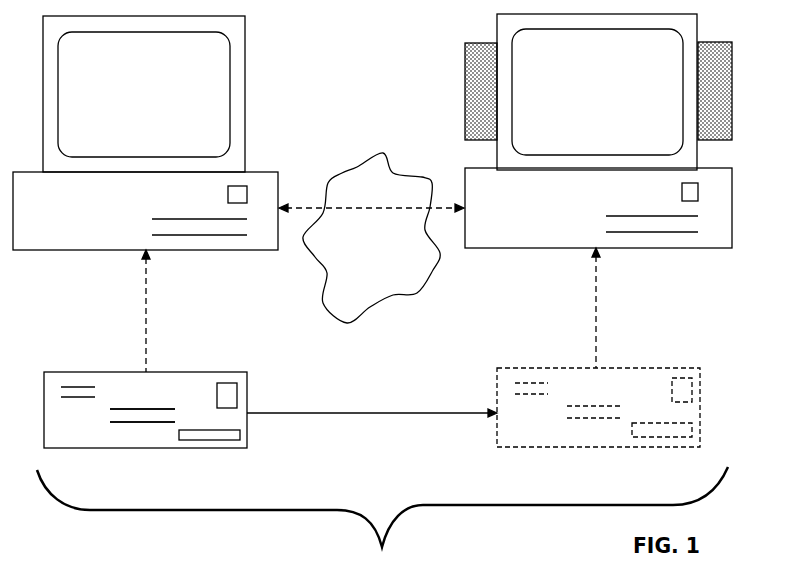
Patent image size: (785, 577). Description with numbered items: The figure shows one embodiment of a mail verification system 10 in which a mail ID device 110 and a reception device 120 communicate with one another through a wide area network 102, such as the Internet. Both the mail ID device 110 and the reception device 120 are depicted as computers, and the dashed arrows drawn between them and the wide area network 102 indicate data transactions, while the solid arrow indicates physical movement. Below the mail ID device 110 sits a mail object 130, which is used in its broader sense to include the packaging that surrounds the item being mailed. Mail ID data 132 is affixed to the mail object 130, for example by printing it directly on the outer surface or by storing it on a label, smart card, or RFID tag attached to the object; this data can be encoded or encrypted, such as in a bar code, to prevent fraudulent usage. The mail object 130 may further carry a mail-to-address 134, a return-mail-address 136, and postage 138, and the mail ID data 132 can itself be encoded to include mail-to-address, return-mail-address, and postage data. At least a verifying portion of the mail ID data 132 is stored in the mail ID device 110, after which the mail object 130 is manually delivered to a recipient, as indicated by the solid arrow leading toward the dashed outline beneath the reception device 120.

The mail verification system 10 is at (382, 520).
The wide area network 102 is at (345, 323).
The mail ID device 110 is at (245, 38).
The reception device 120 is at (545, 250).
The mail object 130 is at (157, 452).
The mail ID data 132 is at (240, 435).
The mail-to-address 134 is at (129, 430).
The return-mail-address 136 is at (110, 391).
The postage 138 is at (243, 398).